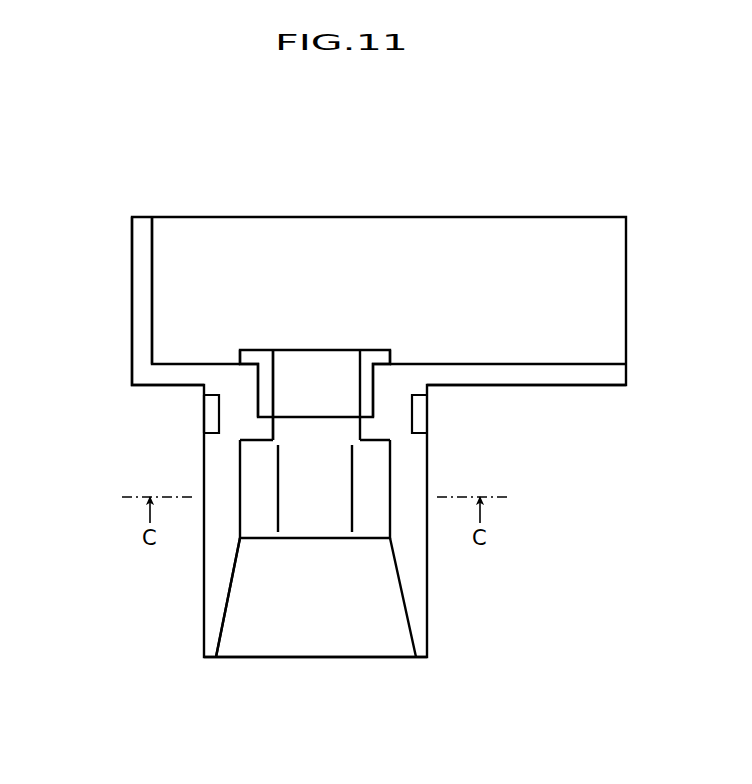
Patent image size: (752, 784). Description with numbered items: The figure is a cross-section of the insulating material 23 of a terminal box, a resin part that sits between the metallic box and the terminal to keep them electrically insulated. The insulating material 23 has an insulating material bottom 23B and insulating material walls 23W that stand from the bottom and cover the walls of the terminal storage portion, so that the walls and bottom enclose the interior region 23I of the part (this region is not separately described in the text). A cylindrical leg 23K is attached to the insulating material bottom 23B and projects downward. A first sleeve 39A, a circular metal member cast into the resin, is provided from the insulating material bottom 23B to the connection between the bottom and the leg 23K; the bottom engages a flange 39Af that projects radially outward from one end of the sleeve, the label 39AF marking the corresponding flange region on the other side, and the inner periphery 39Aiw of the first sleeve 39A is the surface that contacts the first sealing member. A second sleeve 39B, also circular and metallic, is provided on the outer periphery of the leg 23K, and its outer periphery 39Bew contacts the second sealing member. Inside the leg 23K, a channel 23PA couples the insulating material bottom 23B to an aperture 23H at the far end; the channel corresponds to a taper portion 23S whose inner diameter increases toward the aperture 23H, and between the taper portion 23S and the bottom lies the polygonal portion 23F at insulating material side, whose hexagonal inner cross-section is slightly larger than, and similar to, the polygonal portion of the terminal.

The insulating material 23 is at (120, 165).
The interior space 23I is at (462, 252).
The insulating material wall 23W is at (258, 230).
The insulating material bottom 23B is at (592, 377).
The first sleeve 39A is at (340, 312).
The flange 39Af is at (250, 360).
The flange surface 39AF is at (373, 360).
The inner periphery 39Aiw is at (277, 373).
The polygonal portion at insulating material side 23F is at (378, 468).
The taper portion 23S is at (378, 608).
The second sleeve 39B is at (204, 417).
The outer periphery 39Bew is at (203, 405).
The leg 23K is at (418, 447).
The channel in leg 23PA is at (257, 600).
The aperture 23H is at (315, 657).